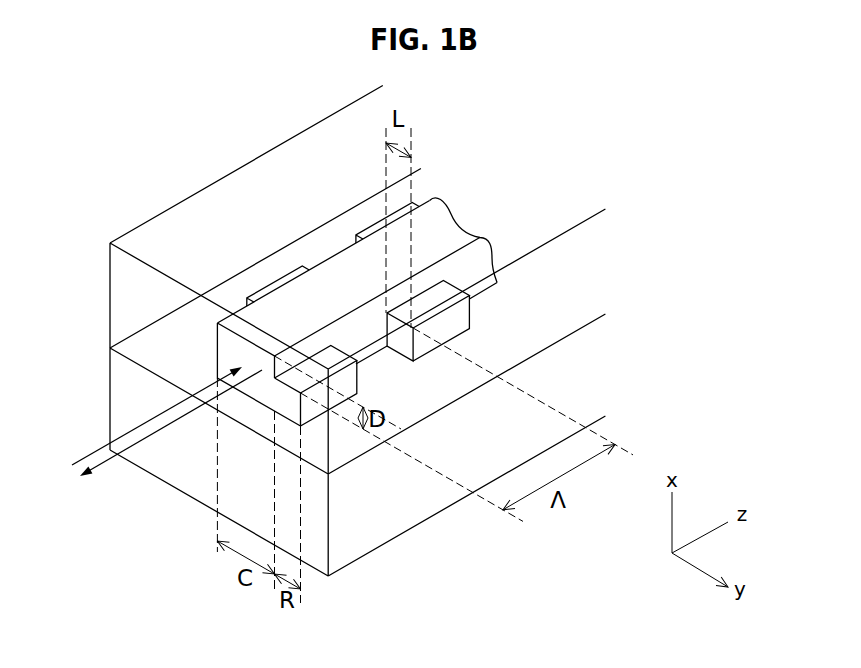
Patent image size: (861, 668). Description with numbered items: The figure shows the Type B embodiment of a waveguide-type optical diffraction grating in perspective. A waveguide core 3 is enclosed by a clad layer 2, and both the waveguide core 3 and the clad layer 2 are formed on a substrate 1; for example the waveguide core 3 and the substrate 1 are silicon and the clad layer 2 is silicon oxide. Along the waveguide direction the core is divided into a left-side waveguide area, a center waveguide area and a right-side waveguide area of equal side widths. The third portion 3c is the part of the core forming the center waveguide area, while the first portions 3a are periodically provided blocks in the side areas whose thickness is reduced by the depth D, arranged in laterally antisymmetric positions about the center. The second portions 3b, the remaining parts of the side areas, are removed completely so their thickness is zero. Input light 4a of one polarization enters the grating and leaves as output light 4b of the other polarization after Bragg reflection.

The substrate 1 is at (120, 383).
The clad layer 2 is at (125, 286).
The waveguide core 3 is at (456, 260).
The first portions 3a is at (290, 280).
The second portions 3b is at (366, 364).
The third portion 3c is at (460, 227).
The input light 4a is at (135, 426).
The output light 4b is at (147, 438).